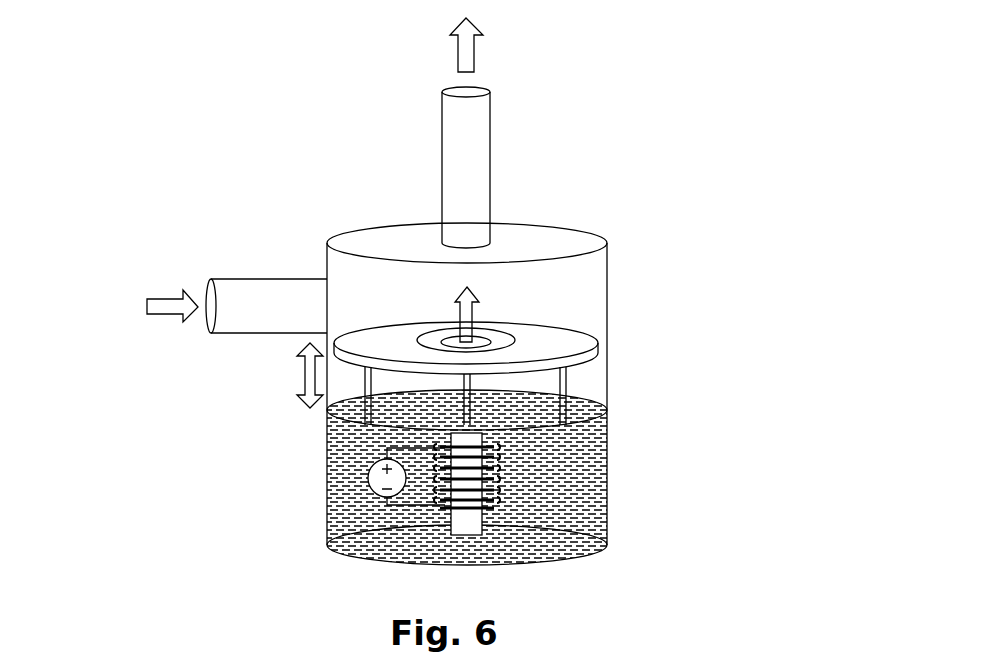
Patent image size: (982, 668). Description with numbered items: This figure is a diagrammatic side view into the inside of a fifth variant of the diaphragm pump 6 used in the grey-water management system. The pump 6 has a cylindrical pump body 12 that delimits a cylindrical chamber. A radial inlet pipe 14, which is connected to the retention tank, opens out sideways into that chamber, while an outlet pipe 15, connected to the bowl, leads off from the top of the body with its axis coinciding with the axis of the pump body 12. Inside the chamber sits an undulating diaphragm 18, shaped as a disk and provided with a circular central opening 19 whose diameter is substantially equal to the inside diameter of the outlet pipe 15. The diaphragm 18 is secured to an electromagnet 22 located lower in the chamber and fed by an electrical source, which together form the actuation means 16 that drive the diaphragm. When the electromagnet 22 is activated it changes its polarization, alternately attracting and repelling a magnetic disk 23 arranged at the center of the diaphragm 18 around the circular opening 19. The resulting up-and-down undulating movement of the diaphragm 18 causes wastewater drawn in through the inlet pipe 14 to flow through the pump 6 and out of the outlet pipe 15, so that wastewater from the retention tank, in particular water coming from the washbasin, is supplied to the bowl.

The diaphragm pump 6 is at (360, 160).
The cylindrical pump body 12 is at (607, 278).
The inlet pipe 14 is at (253, 279).
The outlet pipe 15 is at (492, 143).
The actuation means 16 is at (390, 540).
The undulating diaphragm 18 is at (596, 343).
The circular central opening 19 is at (453, 336).
The electromagnet 22 is at (540, 537).
The magnetic disk 23 is at (514, 334).